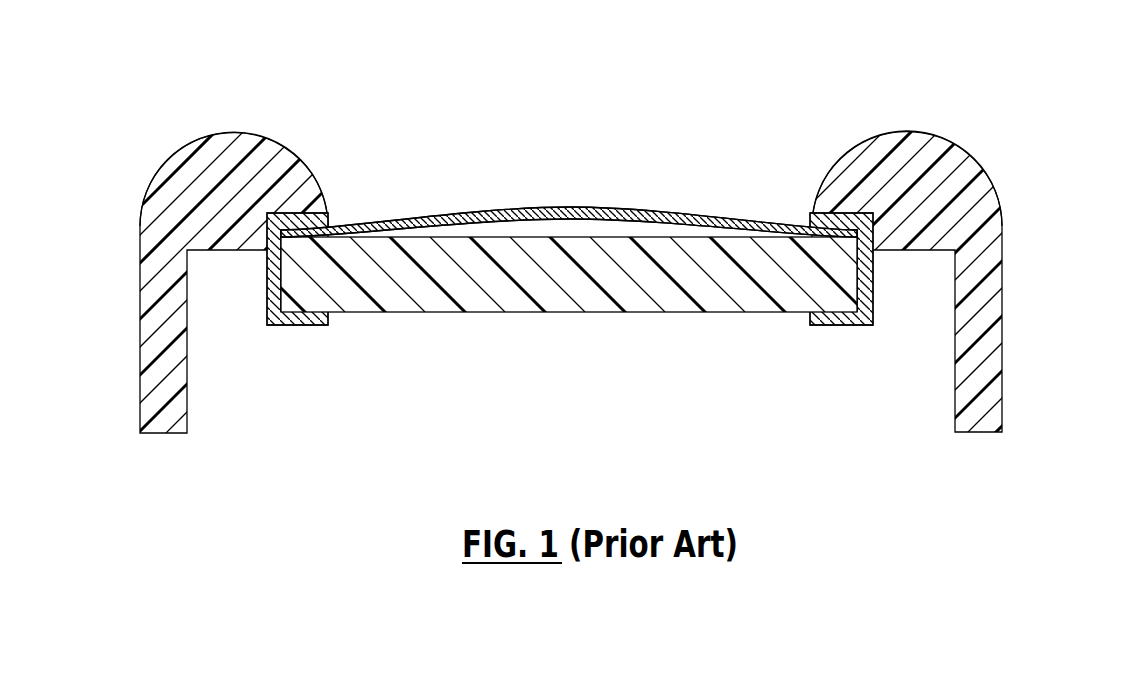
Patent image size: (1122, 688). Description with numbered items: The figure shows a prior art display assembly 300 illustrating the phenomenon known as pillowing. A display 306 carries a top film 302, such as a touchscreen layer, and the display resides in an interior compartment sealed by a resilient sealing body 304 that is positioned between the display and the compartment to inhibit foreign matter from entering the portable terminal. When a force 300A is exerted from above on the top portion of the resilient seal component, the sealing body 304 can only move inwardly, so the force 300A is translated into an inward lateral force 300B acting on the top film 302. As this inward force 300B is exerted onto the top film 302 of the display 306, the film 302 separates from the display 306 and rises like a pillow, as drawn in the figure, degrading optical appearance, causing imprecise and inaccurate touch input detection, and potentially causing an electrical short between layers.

The prior art sensor package 300 is at (963, 216).
The force 300A is at (280, 118).
The lateral force 300B is at (295, 198).
The top film 302 is at (602, 208).
The sealing body 304 is at (848, 326).
The display 306 is at (640, 292).